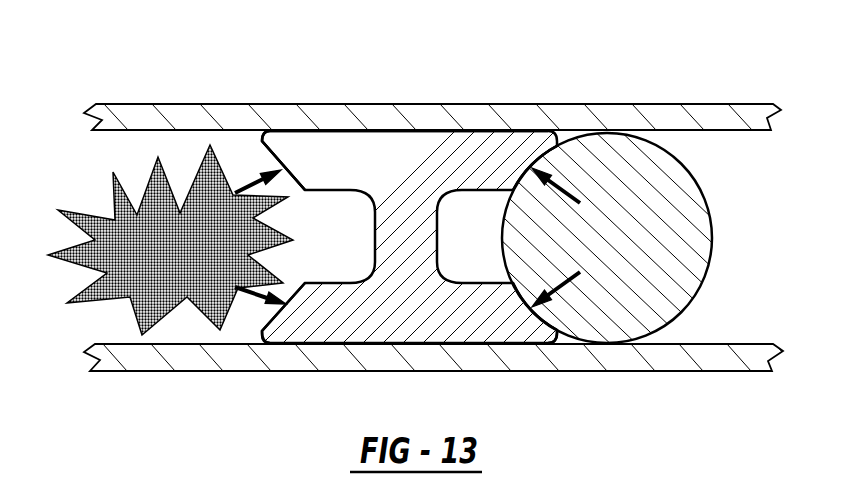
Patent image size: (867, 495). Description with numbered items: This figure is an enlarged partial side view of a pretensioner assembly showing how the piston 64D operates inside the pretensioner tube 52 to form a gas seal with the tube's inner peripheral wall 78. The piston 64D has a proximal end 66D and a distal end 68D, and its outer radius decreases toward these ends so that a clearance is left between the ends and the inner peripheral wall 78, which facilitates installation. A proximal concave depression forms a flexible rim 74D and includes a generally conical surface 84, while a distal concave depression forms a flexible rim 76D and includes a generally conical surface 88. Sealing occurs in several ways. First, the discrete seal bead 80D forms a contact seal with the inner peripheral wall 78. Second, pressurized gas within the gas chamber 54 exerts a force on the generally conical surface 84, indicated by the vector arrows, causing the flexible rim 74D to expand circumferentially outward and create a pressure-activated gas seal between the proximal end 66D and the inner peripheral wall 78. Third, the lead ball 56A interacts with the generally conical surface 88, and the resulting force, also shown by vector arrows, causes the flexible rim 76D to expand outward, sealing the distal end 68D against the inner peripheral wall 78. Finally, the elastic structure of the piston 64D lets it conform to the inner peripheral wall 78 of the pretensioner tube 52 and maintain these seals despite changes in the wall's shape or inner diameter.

The pretensioner tube 52 is at (180, 104).
The gas chamber 54 is at (262, 311).
The lead ball 56A is at (687, 163).
The piston 64D is at (416, 259).
The proximal end 66D is at (260, 333).
The distal end 68D is at (540, 160).
The flexible rim 74D is at (322, 155).
The flexible rim 76D is at (482, 160).
The inner peripheral wall 78 is at (163, 131).
The discrete seal bead 80D is at (415, 130).
The generally conical surface 84 is at (248, 135).
The generally conical surface 88 is at (567, 327).